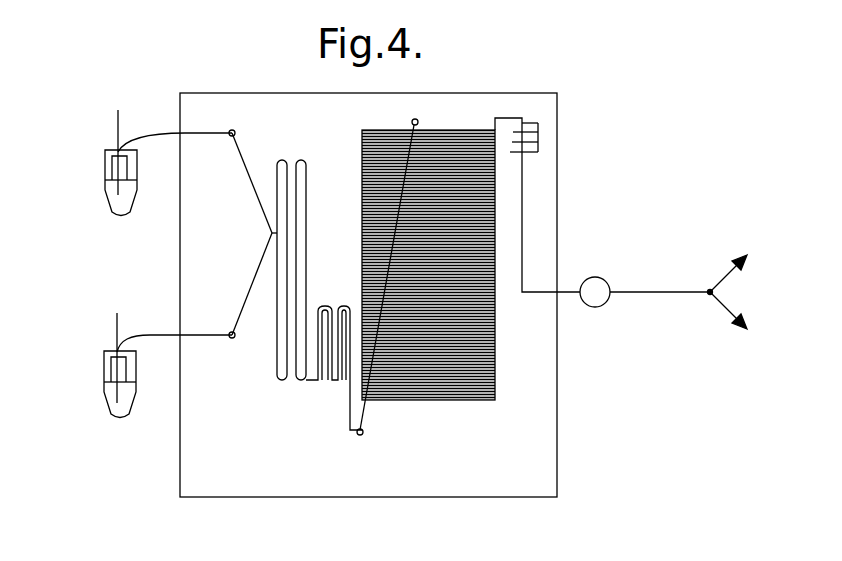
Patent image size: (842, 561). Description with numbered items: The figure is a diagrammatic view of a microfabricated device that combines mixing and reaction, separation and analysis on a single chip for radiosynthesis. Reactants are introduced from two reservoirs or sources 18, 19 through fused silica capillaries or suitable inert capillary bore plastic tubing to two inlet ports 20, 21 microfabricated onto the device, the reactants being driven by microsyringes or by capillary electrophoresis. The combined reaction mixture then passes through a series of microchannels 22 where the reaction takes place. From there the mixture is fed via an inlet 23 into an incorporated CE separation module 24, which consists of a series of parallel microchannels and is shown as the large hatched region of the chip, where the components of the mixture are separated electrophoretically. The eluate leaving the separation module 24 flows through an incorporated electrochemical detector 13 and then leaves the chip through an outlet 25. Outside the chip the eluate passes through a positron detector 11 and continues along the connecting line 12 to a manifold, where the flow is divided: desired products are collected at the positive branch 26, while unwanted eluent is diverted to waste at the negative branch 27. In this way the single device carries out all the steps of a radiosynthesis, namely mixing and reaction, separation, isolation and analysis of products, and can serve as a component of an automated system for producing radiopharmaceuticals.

The positron detector 11 is at (596, 290).
The outlet conduit 12 is at (630, 294).
The electrochemical detector 13 is at (541, 127).
The reservoir 18 is at (105, 175).
The reservoir 19 is at (104, 376).
The inlet port 20 is at (232, 130).
The inlet port 21 is at (232, 338).
The microchannels 22 is at (283, 160).
The inlet 23 is at (360, 435).
The CE separation module 24 is at (467, 130).
The outlet 25 is at (708, 290).
The collection of desired product 26 is at (728, 272).
The elution to waste 27 is at (722, 312).